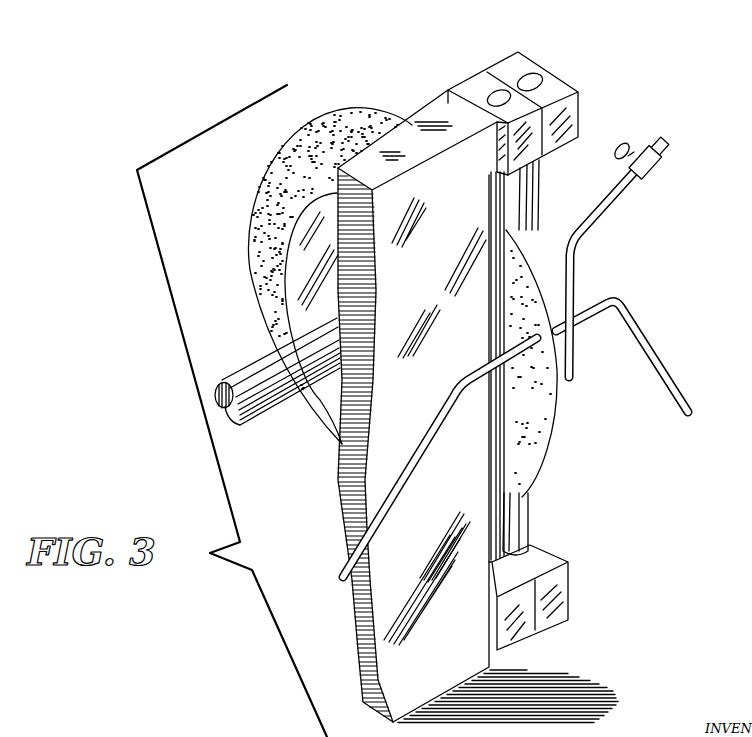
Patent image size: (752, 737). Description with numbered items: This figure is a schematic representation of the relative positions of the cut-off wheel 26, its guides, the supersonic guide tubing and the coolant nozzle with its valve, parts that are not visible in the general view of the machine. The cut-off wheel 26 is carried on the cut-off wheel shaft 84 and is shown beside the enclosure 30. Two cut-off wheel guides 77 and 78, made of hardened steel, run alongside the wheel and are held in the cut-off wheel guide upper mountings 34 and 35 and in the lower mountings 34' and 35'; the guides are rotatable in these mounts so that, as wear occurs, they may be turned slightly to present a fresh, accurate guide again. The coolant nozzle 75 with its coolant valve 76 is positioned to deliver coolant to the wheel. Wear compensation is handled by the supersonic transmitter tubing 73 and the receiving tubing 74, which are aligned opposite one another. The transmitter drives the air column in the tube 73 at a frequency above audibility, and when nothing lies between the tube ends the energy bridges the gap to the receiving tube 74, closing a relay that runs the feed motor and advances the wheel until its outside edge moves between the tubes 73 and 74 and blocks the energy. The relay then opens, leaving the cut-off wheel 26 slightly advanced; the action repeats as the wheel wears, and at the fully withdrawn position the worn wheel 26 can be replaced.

The cut-off wheel 26 is at (365, 112).
The enclosure 30 is at (415, 405).
The cut-off wheel guide upper mounting 34 is at (503, 113).
The cut-off wheel guide upper mounting 35 is at (532, 97).
The cut-off wheel guide lower mounting 34' is at (533, 602).
The cut-off wheel guide lower mounting 35' is at (574, 594).
The supersonic transmitter tubing 73 is at (640, 323).
The receiving tubing 74 is at (341, 570).
The coolant nozzle 75 is at (604, 210).
The coolant valve 76 is at (619, 145).
The cut-off wheel guide 77 is at (518, 507).
The cut-off wheel guide 78 is at (496, 538).
The cut-off wheel shaft 84 is at (250, 372).